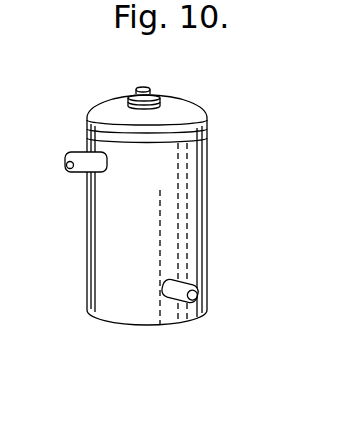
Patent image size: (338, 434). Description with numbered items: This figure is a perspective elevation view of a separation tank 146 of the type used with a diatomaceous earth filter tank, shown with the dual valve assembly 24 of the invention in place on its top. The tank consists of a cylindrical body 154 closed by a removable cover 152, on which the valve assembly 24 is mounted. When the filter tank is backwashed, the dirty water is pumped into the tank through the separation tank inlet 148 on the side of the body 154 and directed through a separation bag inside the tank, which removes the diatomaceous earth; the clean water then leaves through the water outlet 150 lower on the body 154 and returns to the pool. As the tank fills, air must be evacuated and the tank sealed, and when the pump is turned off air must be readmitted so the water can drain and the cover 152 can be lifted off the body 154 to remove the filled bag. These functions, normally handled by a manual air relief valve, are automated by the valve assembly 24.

The separation tank 146 is at (227, 205).
The dual valve assembly 24 is at (151, 90).
The cover 152 is at (190, 112).
The separation tank inlet 148 is at (68, 173).
The body 154 is at (95, 235).
The water outlet 150 is at (185, 285).